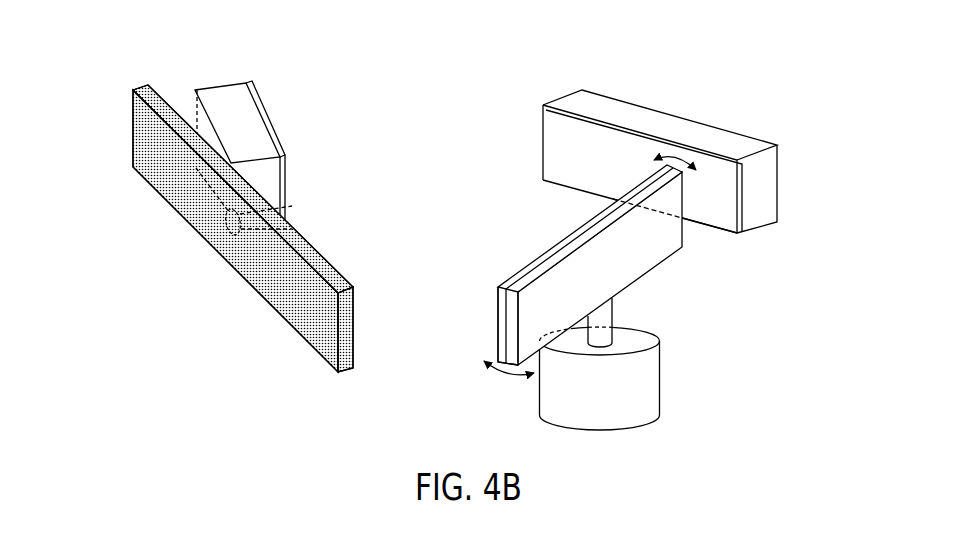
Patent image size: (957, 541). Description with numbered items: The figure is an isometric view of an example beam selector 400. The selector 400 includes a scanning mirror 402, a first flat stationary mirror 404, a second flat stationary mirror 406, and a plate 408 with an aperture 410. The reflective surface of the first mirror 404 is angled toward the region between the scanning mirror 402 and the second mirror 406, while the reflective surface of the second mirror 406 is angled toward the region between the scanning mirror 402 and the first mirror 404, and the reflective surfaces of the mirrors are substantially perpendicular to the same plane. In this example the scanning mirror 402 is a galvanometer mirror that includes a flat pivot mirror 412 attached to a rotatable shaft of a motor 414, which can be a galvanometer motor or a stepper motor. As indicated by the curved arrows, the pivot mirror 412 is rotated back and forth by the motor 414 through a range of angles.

The beam selector 400 is at (610, 215).
The scanning mirror 402 is at (579, 266).
The first flat stationary mirror 404 is at (253, 82).
The second flat stationary mirror 406 is at (583, 97).
The plate 408 is at (133, 153).
The aperture 410 is at (222, 236).
The flat pivot mirror 412 is at (500, 305).
The motor 414 is at (656, 358).